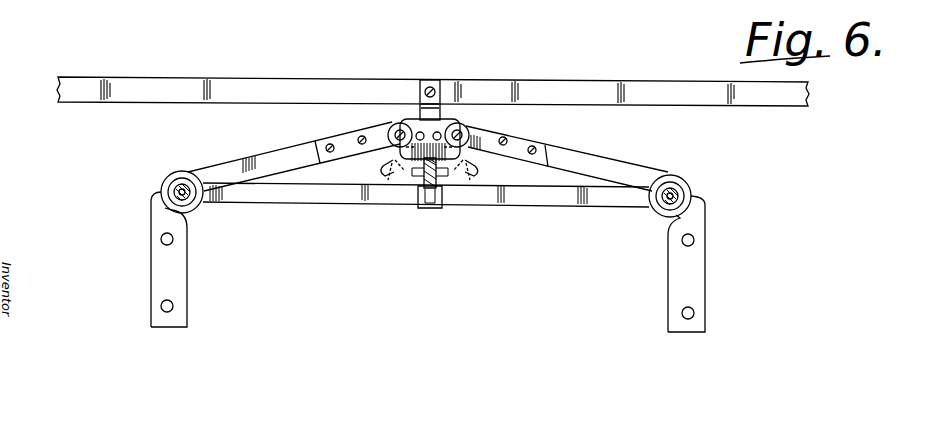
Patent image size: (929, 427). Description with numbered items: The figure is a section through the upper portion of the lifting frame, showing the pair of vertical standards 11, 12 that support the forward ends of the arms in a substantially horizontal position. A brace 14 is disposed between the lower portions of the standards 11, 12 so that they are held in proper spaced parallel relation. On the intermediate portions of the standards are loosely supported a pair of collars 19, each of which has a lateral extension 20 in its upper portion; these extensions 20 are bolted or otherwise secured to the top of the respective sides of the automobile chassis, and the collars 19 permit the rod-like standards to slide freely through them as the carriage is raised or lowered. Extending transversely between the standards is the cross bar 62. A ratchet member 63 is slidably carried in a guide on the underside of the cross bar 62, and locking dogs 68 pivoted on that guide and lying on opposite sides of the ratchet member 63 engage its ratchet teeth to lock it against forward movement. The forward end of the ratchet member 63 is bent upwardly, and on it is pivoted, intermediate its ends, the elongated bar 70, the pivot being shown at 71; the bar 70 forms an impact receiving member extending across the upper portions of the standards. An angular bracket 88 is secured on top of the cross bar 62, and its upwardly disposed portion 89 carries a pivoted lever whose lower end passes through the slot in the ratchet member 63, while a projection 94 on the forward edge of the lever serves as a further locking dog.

The elongated bar 70 is at (372, 88).
The pivot 71 is at (436, 90).
The angular bracket 88 is at (460, 148).
The collar 19 is at (191, 162).
The cross bar 62 is at (603, 170).
The brace 14 is at (297, 195).
The lateral extension 20 is at (168, 276).
The vertical standard 11 is at (176, 187).
The vertical standard 12 is at (675, 191).
The locking dog 68 is at (377, 186).
The upwardly disposed portion 89 is at (452, 192).
The projection 94 is at (412, 198).
The ratchet member 63 is at (432, 205).